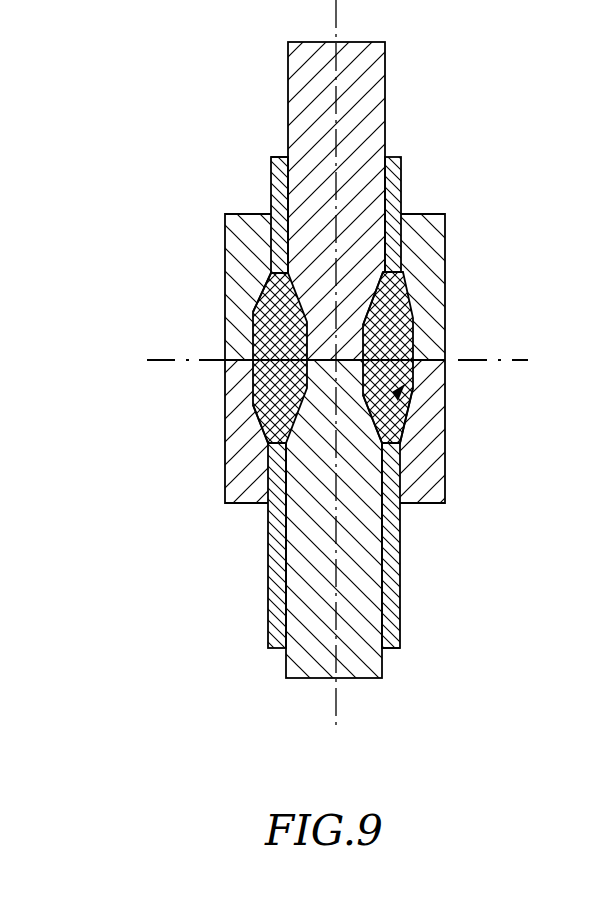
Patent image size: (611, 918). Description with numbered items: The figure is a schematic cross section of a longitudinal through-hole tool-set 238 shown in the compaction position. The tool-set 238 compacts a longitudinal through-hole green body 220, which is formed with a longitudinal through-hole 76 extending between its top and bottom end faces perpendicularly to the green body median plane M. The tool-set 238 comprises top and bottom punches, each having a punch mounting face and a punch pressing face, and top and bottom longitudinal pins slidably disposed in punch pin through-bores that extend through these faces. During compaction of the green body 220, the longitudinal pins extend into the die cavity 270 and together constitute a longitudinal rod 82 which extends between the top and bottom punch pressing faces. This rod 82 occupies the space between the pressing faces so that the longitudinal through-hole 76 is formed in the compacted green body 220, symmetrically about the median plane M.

The longitudinal through-hole tool-set 238 is at (190, 265).
The longitudinal through-hole 76 is at (277, 343).
The longitudinal rod 82 is at (262, 371).
The longitudinal through-hole green body 220 is at (403, 316).
The die cavity 270 is at (397, 428).
The green body median plane M is at (477, 360).